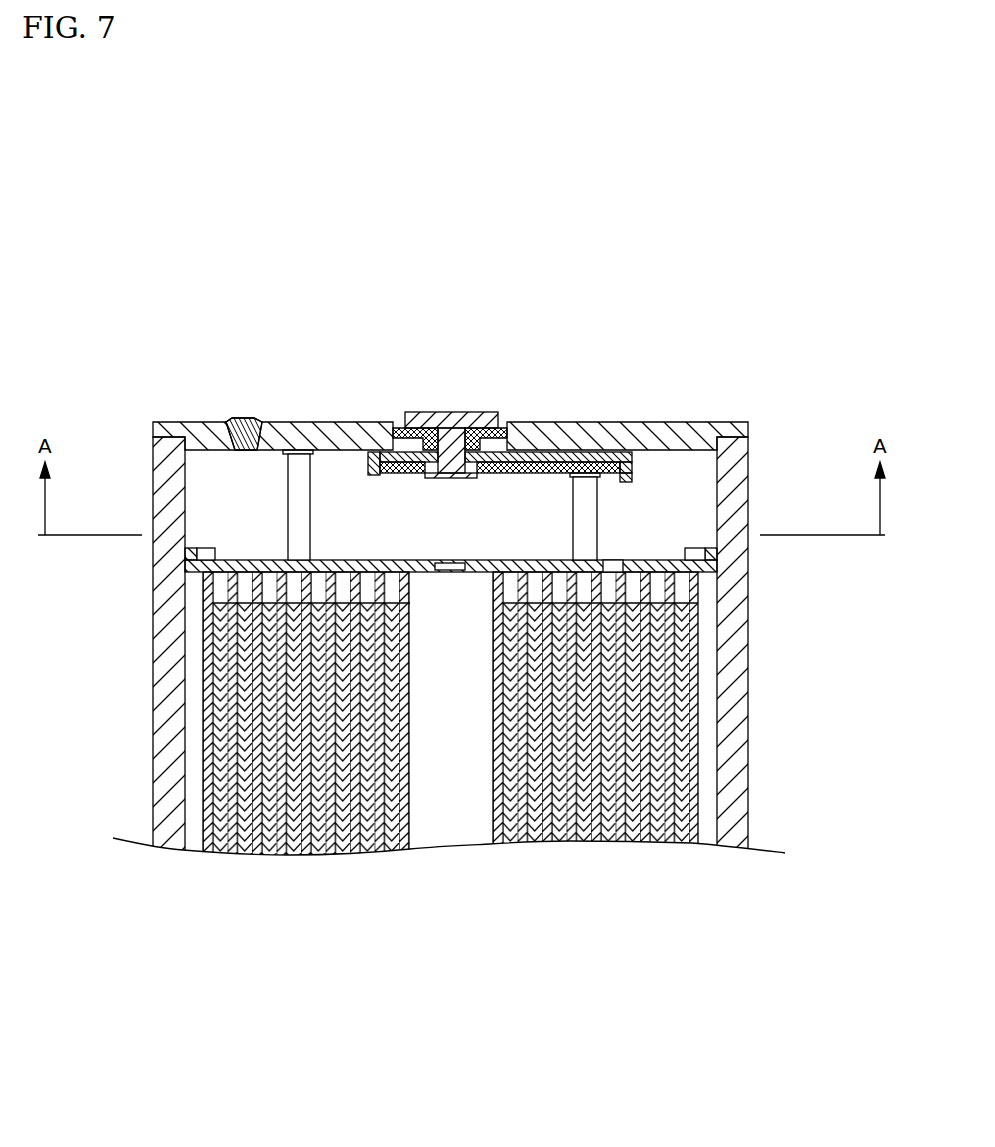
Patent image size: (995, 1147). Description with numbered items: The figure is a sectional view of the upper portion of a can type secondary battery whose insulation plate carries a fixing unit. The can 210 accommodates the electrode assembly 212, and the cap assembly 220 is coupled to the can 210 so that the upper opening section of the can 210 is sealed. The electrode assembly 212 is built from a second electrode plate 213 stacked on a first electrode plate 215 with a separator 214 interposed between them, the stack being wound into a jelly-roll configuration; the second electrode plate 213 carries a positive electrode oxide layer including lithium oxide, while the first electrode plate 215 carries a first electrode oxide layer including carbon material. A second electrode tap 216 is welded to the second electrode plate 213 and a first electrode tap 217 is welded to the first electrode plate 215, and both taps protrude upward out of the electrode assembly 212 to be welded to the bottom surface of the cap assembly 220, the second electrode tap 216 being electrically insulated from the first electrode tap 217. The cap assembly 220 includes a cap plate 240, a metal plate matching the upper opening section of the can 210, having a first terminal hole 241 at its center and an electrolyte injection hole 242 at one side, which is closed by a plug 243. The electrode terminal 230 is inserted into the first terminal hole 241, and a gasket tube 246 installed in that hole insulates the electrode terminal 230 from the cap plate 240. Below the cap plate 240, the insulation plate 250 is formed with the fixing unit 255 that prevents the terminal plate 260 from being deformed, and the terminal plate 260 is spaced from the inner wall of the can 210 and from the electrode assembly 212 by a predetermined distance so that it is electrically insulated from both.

The can 210 is at (740, 735).
The electrode assembly 212 is at (715, 647).
The second electrode plate 213 is at (678, 838).
The separator 214 is at (692, 840).
The first electrode plate 215 is at (657, 840).
The second electrode tap 216 is at (300, 497).
The first electrode tap 217 is at (592, 520).
The cap assembly 220 is at (505, 399).
The electrode terminal 230 is at (445, 412).
The cap plate 240 is at (697, 423).
The first terminal hole 241 is at (507, 440).
The electrolyte injection hole 242 is at (217, 424).
The plug 243 is at (240, 418).
The gasket tube 246 is at (503, 428).
The insulation plate 250 is at (632, 467).
The fixing unit 255 is at (632, 478).
The terminal plate 260 is at (363, 423).